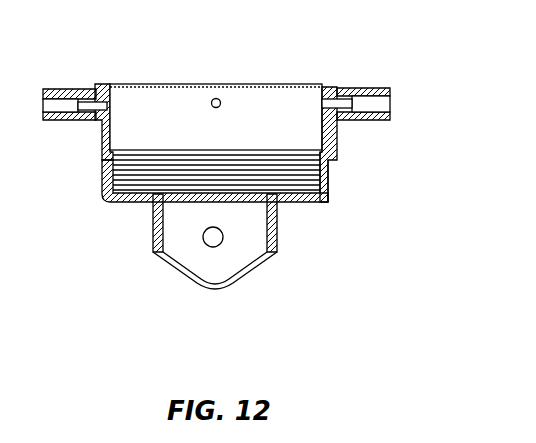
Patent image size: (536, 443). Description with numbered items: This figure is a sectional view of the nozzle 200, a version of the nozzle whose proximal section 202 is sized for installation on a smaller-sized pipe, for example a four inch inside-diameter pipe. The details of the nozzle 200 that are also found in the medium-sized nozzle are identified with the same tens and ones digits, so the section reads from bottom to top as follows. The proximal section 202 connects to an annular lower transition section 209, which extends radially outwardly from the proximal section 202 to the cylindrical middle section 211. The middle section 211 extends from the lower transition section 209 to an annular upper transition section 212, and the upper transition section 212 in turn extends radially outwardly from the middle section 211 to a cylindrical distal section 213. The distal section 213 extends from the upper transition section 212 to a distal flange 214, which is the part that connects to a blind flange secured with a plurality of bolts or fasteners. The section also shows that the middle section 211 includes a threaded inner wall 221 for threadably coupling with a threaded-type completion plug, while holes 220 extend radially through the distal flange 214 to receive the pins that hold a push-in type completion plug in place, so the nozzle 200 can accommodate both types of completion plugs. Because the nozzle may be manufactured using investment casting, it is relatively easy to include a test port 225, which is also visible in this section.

The nozzle 200 is at (97, 55).
The proximal section 202 is at (279, 239).
The lower transition section 209 is at (297, 193).
The middle section 211 is at (323, 196).
The upper transition section 212 is at (110, 152).
The distal section 213 is at (335, 142).
The distal flange 214 is at (360, 88).
The holes 220 is at (372, 104).
The threaded inner wall 221 is at (140, 172).
The test port 225 is at (203, 240).